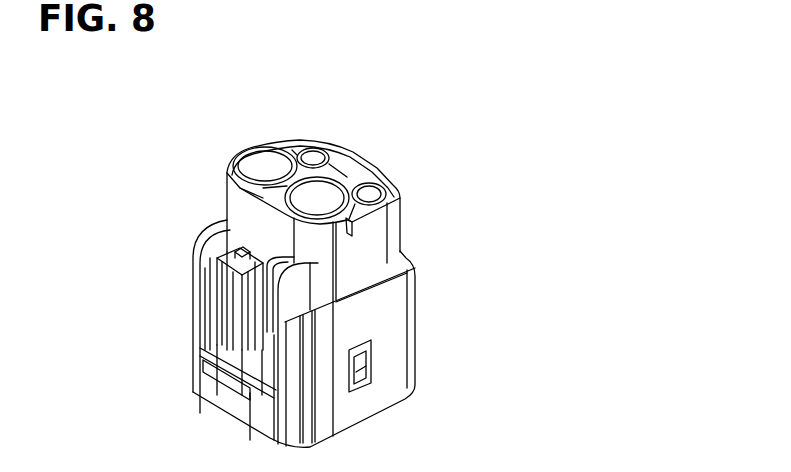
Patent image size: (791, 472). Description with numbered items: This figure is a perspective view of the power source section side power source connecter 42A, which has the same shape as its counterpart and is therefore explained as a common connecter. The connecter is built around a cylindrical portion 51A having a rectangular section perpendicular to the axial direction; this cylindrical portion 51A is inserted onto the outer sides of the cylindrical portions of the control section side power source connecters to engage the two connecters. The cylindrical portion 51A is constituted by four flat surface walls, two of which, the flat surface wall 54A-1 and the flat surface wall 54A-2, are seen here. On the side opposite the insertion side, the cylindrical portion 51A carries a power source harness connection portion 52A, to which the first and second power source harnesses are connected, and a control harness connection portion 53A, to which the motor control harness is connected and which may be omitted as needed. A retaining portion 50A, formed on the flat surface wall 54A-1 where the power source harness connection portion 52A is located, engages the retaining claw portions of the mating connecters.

The power source section side power source connecter 42A is at (183, 263).
The power source harness connection portion 52A is at (264, 166).
The control harness connection portion 53A is at (349, 172).
The retaining portion 50A is at (227, 323).
The flat surface wall 54A-1 is at (198, 380).
The cylindrical portion 51A is at (393, 322).
The flat surface wall 54A-2 is at (366, 393).